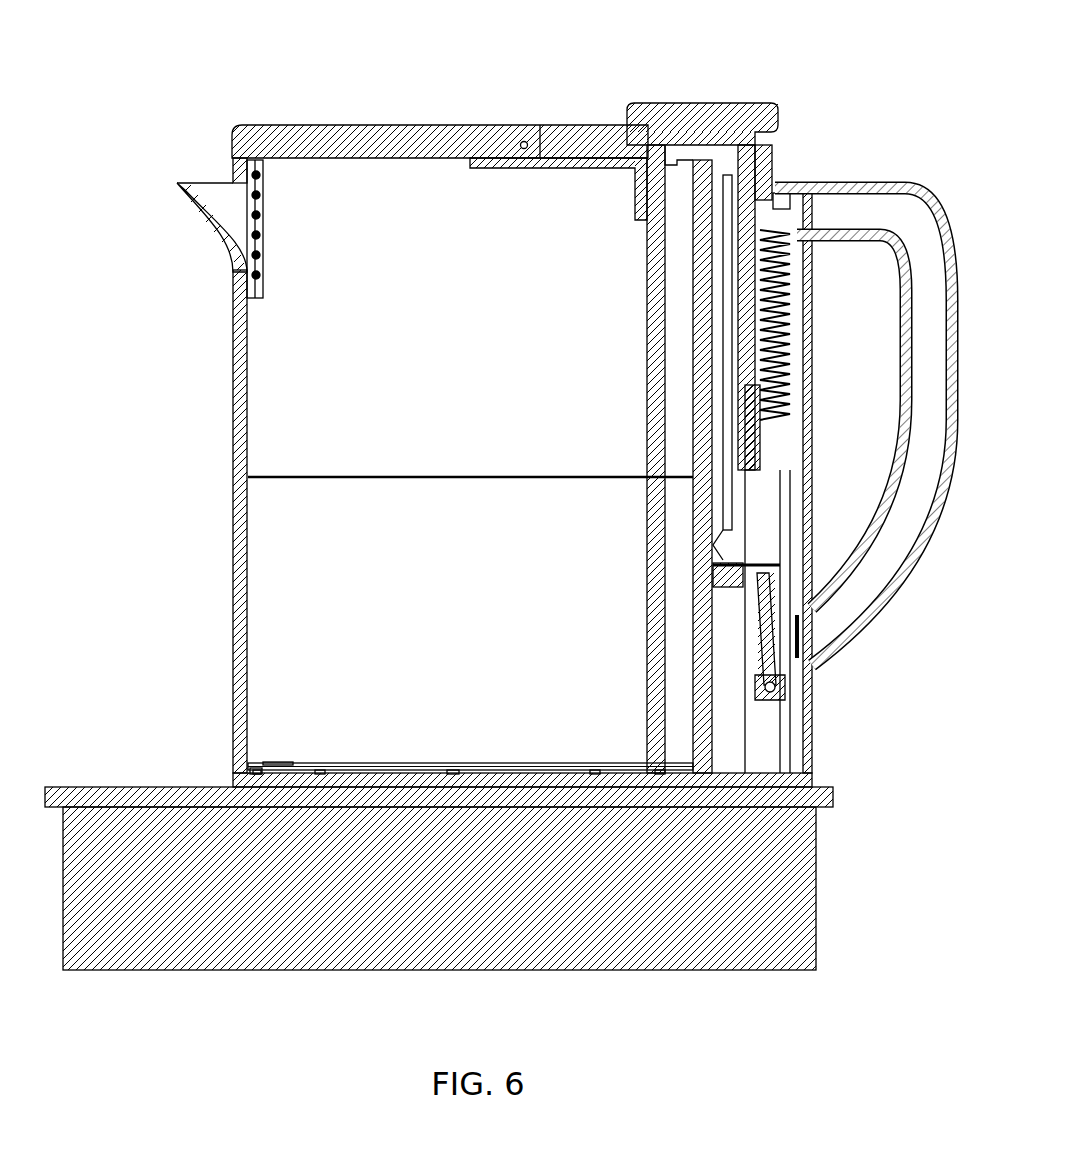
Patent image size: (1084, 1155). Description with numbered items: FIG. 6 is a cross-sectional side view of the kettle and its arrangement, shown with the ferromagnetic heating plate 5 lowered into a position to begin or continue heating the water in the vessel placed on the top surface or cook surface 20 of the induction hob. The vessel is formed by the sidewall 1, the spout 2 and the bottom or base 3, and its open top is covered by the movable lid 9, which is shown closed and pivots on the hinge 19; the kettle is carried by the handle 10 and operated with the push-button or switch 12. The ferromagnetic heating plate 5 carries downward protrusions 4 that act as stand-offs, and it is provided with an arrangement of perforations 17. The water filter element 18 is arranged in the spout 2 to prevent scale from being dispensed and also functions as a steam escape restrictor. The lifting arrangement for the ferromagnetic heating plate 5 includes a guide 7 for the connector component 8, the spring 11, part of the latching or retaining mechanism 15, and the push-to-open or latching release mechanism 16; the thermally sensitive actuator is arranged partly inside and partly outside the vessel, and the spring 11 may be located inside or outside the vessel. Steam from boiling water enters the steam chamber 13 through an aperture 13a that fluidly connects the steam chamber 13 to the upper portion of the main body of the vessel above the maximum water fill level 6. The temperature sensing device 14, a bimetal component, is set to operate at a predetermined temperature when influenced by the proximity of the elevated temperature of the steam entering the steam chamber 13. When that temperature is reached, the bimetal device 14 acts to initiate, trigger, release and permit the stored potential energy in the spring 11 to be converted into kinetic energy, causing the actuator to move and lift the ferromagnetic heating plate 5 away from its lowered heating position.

The sidewall 1 is at (233, 393).
The spout 2 is at (200, 208).
The bottom 3 is at (570, 783).
The downward protrusions 4 is at (258, 770).
The ferromagnetic heating plate 5 is at (293, 762).
The maximum water fill level 6 is at (320, 478).
The guide 7 is at (635, 187).
The connector component 8 is at (654, 690).
The movable lid 9 is at (277, 145).
The handle 10 is at (870, 571).
The spring 11 is at (797, 270).
The push-button or switch 12 is at (700, 100).
The steam chamber 13 is at (738, 502).
The aperture 13a is at (765, 200).
The temperature sensing device 14 is at (758, 563).
The latching or retaining mechanism 15 is at (779, 580).
The latching release mechanism 16 is at (784, 696).
The perforations 17 is at (415, 762).
The water filter element 18 is at (240, 205).
The hinge 19 is at (522, 140).
The top surface or cook surface 20 is at (88, 787).